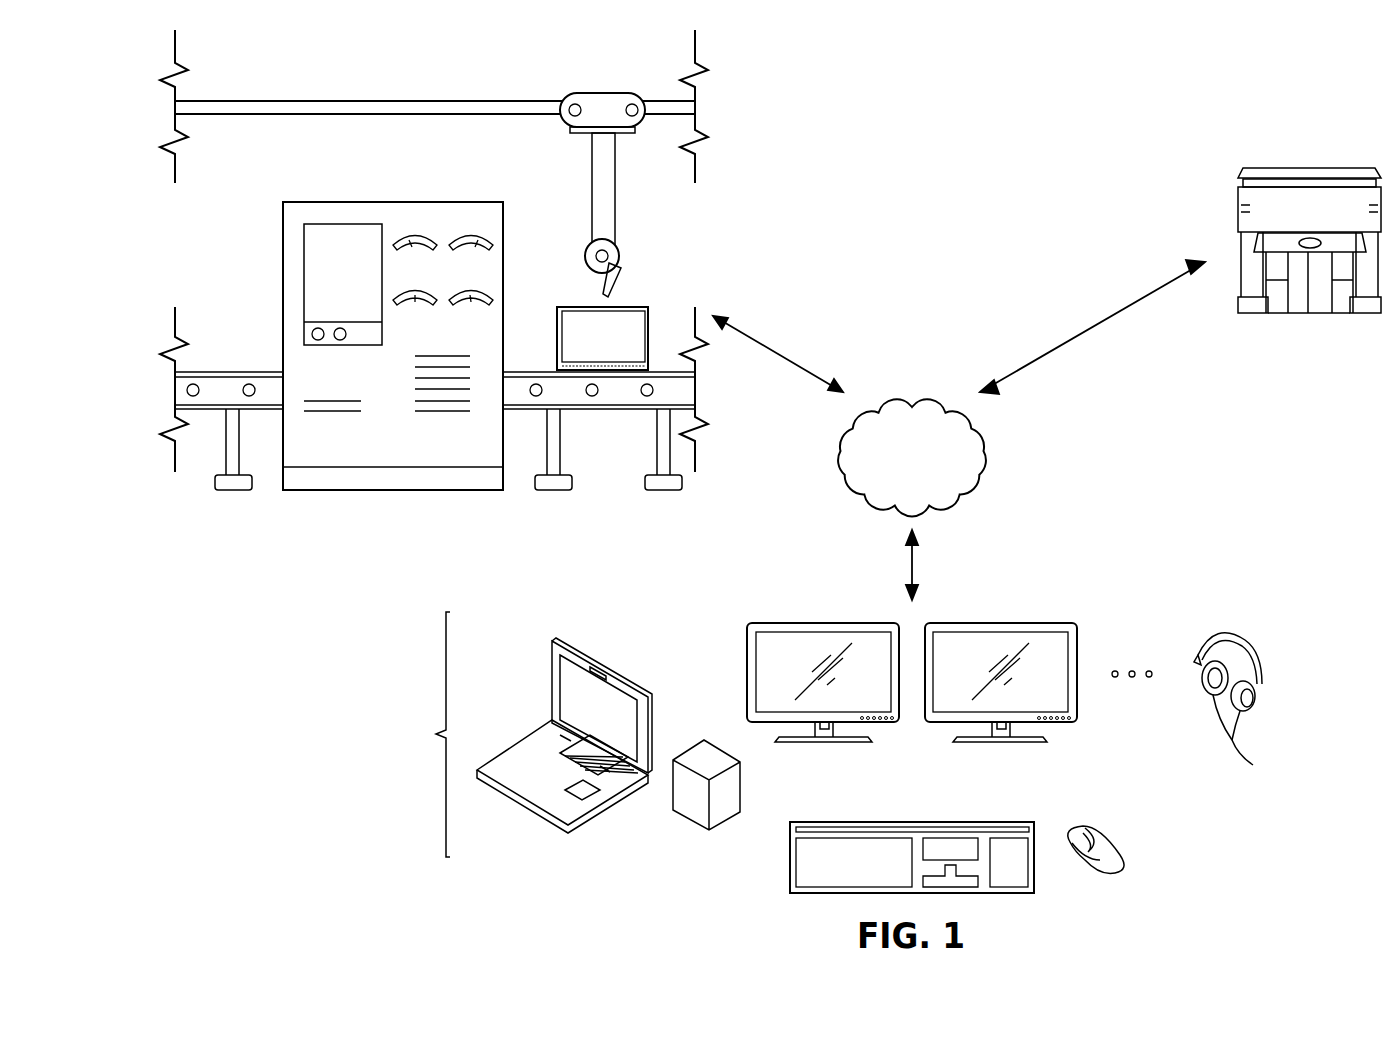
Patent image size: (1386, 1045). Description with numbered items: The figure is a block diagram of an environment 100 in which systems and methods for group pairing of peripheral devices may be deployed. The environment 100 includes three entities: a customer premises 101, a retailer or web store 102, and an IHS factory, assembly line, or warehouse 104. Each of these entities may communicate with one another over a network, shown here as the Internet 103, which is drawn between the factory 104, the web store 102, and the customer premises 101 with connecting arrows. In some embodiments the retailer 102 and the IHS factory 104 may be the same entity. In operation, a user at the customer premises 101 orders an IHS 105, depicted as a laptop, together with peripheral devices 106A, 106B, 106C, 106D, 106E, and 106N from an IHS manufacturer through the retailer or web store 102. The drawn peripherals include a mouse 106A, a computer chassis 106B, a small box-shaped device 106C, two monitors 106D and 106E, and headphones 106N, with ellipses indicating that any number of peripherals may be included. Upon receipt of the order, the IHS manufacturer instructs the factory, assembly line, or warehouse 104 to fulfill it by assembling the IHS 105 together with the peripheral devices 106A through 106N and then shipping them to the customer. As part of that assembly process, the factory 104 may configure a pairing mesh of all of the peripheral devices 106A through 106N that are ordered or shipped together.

The environment 100 is at (1205, 80).
The customer premises 101 is at (797, 755).
The retailer or web store 102 is at (1310, 167).
The Internet 103 is at (976, 492).
The IHS factory, assembly line, or warehouse 104 is at (138, 185).
The IHS 105 is at (521, 803).
The peripheral device 106A is at (1105, 873).
The peripheral device 106B is at (790, 850).
The peripheral device 106C is at (688, 823).
The peripheral device 106D is at (824, 742).
The peripheral device 106E is at (1001, 742).
The peripheral device 106N is at (1232, 637).